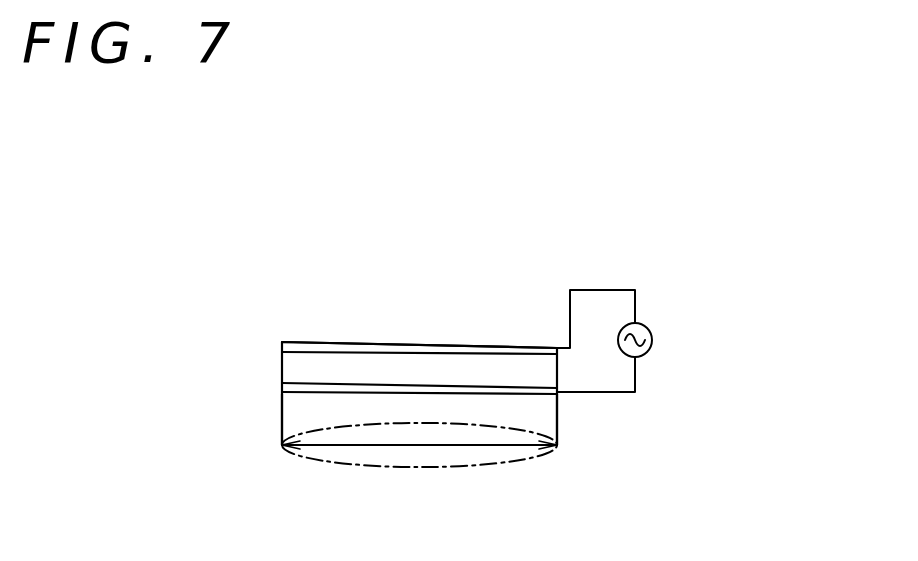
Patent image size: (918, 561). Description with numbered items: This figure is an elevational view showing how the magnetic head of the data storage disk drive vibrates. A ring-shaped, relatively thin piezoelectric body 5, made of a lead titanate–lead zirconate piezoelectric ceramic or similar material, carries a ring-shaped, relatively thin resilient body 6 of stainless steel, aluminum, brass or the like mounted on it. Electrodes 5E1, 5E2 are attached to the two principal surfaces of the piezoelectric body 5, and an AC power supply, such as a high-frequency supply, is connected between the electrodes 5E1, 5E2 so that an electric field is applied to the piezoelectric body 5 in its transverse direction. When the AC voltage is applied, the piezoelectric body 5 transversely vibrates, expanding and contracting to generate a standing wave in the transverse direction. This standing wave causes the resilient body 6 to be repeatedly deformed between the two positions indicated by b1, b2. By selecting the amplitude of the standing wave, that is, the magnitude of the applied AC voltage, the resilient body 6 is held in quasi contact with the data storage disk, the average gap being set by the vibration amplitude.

The piezoelectric body 5 is at (371, 360).
The electrode 5E1 is at (518, 348).
The electrode 5E2 is at (535, 392).
The resilient body 6 is at (538, 412).
The deformation position b1 is at (410, 440).
The deformation position b2 is at (453, 465).